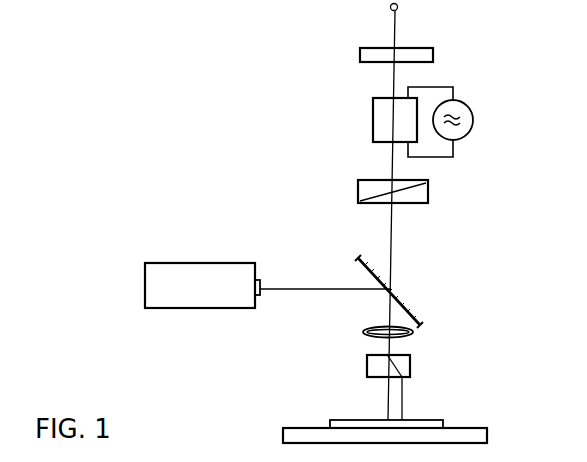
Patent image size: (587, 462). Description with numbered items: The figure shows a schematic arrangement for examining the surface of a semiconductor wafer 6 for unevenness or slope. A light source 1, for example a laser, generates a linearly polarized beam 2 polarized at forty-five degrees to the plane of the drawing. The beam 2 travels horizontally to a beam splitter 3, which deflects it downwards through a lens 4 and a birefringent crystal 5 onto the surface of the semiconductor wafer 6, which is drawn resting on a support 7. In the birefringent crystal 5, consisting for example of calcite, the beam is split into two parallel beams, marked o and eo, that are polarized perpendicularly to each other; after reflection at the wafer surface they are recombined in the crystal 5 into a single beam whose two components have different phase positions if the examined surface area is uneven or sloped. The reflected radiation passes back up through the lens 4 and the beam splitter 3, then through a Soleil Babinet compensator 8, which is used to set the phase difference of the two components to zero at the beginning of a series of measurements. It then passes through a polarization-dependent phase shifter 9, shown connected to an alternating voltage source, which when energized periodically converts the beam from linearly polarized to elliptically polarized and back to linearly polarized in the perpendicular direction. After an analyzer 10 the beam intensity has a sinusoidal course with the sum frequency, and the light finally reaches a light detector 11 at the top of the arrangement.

The light source 1 is at (243, 275).
The linearly polarized beam 2 is at (300, 289).
The beam splitter 3 is at (414, 312).
The lens 4 is at (413, 332).
The birefringent crystal 5 is at (404, 364).
The semiconductor wafer 6 is at (437, 423).
The support base 7 is at (470, 437).
The Soleil Babinet compensator 8 is at (428, 190).
The polarization-dependent phase shifter 9 is at (373, 118).
The analyzer 10 is at (431, 50).
The light detector 11 is at (398, 6).